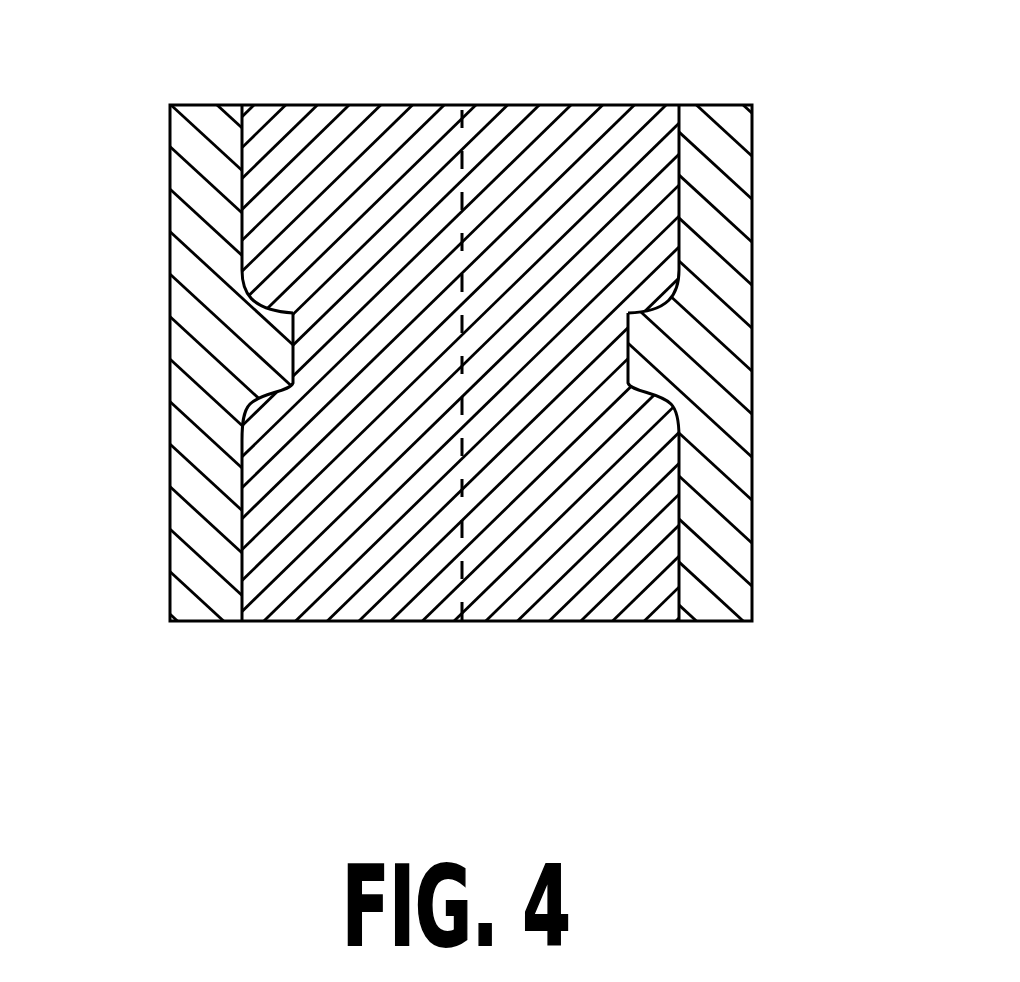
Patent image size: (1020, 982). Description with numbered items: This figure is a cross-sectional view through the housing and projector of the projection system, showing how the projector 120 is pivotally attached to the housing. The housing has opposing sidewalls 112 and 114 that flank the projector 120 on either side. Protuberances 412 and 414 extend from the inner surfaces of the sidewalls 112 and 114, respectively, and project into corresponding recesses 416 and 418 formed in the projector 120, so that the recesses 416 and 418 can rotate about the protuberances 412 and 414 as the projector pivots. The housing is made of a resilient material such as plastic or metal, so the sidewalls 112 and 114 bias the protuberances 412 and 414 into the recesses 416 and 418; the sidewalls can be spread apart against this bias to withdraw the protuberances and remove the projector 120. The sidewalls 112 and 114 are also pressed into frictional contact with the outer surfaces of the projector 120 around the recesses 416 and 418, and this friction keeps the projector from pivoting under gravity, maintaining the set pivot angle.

The sidewall 112 is at (165, 601).
The sidewall 114 is at (752, 132).
The projector 120 is at (605, 607).
The protuberance 412 is at (275, 364).
The protuberance 414 is at (630, 365).
The recess 416 is at (279, 307).
The recess 418 is at (663, 303).